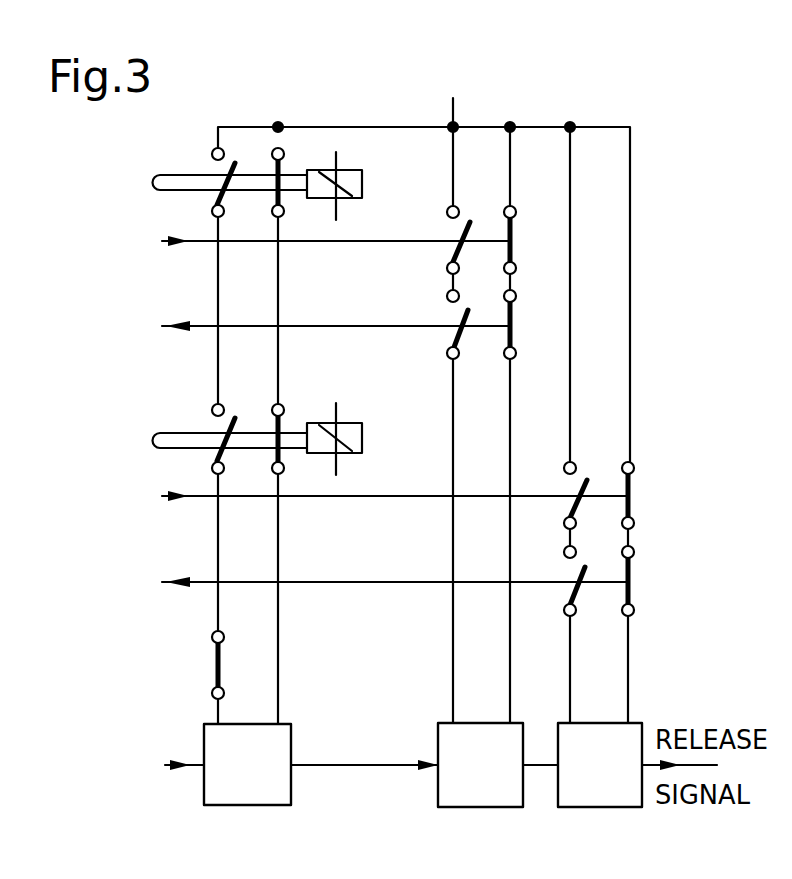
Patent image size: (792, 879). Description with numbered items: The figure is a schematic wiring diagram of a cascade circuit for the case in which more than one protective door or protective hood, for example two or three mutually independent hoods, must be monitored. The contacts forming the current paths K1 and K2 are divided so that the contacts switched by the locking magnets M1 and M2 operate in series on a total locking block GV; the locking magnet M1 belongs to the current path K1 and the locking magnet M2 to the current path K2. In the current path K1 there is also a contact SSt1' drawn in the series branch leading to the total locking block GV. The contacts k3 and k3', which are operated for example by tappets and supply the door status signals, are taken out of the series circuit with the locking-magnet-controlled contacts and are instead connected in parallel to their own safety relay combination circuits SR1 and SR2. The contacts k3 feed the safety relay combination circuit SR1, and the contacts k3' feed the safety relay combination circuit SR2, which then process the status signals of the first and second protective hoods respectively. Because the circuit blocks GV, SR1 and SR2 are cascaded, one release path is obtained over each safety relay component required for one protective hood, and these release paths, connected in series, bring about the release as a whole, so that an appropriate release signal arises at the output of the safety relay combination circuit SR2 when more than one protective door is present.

The current path K1 is at (150, 180).
The current path K2 is at (150, 437).
The locking magnet M1 is at (364, 177).
The locking magnet M2 is at (364, 436).
The contacts k3 is at (502, 272).
The contacts k3' is at (630, 528).
The auxiliary switch of emergency stop SSt1' is at (167, 677).
The total locking block GV is at (247, 764).
The safety relay combination circuit SR1 is at (480, 765).
The safety relay combination circuit SR2 is at (600, 765).